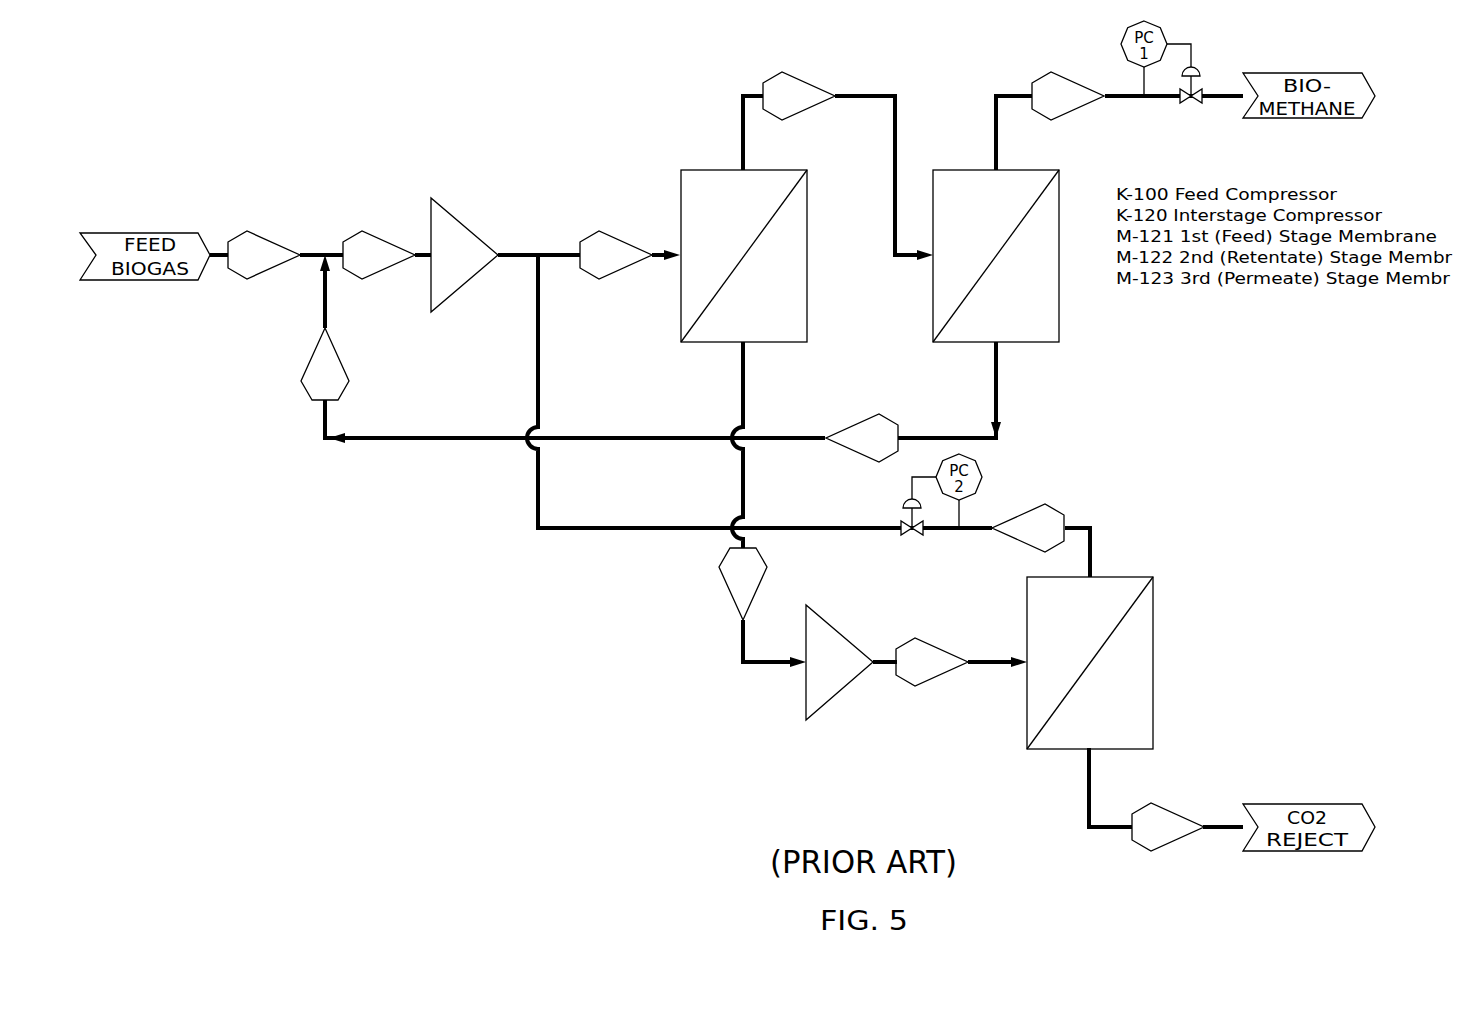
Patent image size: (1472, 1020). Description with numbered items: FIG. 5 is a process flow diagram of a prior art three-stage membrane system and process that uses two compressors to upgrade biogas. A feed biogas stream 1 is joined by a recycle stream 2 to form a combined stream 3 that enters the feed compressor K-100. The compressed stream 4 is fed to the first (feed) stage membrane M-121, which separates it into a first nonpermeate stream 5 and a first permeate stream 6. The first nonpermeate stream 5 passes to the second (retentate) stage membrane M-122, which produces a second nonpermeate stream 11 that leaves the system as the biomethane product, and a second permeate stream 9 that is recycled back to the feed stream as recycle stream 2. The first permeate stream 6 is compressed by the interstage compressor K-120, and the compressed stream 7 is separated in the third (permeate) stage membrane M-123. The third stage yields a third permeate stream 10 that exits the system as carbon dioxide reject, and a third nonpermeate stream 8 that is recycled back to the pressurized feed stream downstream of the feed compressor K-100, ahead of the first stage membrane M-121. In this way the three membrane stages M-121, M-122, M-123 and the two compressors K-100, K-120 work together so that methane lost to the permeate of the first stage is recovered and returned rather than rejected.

The feed biogas stream 1 is at (276, 255).
The recycle stream 2 is at (563, 349).
The combined feed stream to feed compressor 3 is at (387, 255).
The compressed feed stream to first stage membrane 4 is at (589, 255).
The first stage retentate stream 5 is at (838, 166).
The first stage permeate stream 6 is at (762, 504).
The compressed permeate stream to third stage membrane 7 is at (950, 662).
The third stage retentate recycle stream 8 is at (808, 416).
The second stage permeate recycle stream 9 is at (913, 402).
The CO2 reject stream 10 is at (1166, 799).
The biomethane product stream 11 is at (1119, 118).
The feed compressor K-100 is at (438, 216).
The interstage compressor K-120 is at (835, 692).
The 1st (feed) stage membrane M-121 is at (744, 256).
The 2nd (retentate) stage membrane M-122 is at (996, 256).
The 3rd (permeate) stage membrane M-123 is at (1090, 663).